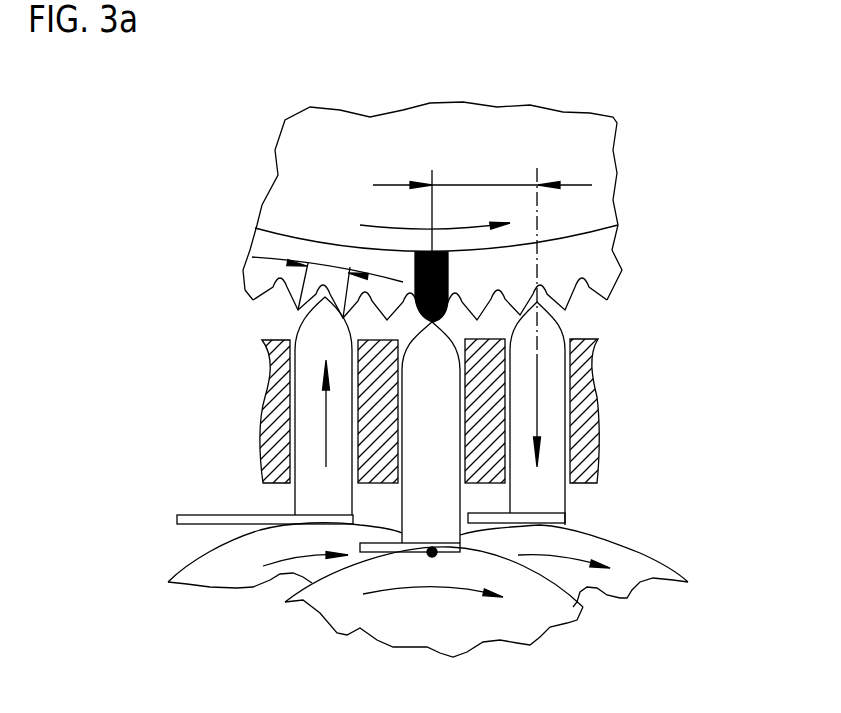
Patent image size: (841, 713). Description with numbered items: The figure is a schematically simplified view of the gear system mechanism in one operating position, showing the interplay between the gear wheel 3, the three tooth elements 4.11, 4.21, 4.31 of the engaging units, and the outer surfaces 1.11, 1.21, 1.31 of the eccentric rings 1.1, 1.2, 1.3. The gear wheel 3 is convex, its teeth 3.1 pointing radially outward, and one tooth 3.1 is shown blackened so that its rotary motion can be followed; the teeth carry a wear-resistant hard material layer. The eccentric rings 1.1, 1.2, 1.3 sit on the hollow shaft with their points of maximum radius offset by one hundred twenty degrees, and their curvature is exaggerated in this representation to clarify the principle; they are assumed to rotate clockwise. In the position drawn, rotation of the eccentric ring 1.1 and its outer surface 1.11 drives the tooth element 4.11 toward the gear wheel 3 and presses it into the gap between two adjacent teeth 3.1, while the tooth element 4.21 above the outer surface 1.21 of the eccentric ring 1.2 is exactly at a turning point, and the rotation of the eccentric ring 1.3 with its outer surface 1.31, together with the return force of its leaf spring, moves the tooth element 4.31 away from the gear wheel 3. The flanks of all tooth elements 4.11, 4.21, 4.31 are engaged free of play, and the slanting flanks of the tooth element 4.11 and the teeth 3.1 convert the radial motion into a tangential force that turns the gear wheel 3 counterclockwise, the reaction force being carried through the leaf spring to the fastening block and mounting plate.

The gear wheel 3 is at (608, 253).
The tooth 3.1 is at (415, 253).
The tooth element 4.11 is at (323, 338).
The tooth element 4.21 is at (427, 453).
The tooth element 4.31 is at (550, 342).
The circular outer surface 1.11 is at (210, 550).
The circular outer surface 1.21 is at (545, 580).
The circular outer surface 1.31 is at (663, 563).
The eccentric ring 1.1 is at (220, 572).
The eccentric ring 1.2 is at (342, 607).
The eccentric ring 1.3 is at (622, 568).